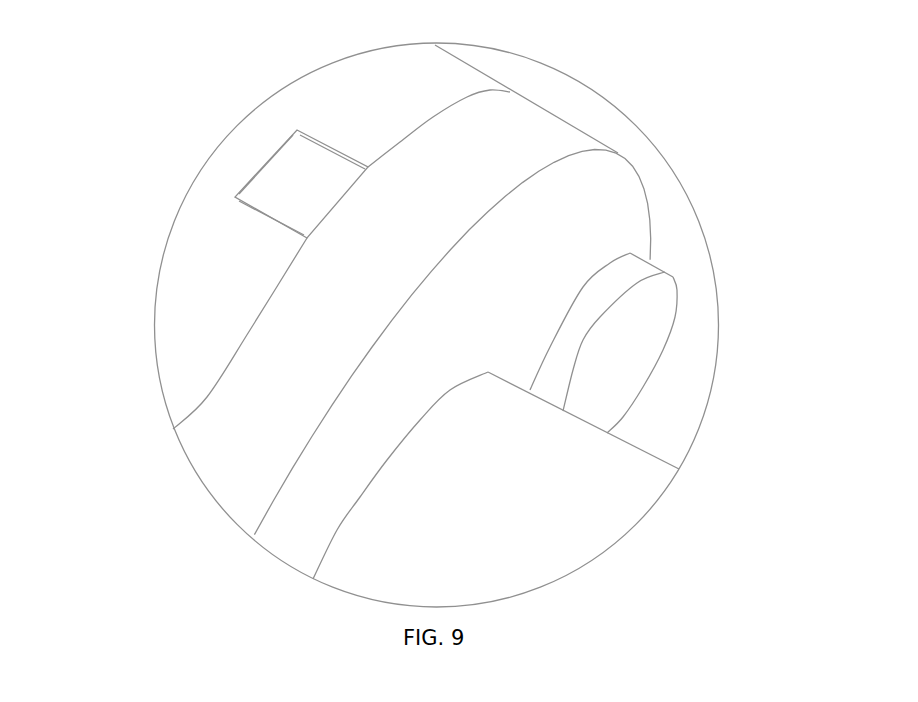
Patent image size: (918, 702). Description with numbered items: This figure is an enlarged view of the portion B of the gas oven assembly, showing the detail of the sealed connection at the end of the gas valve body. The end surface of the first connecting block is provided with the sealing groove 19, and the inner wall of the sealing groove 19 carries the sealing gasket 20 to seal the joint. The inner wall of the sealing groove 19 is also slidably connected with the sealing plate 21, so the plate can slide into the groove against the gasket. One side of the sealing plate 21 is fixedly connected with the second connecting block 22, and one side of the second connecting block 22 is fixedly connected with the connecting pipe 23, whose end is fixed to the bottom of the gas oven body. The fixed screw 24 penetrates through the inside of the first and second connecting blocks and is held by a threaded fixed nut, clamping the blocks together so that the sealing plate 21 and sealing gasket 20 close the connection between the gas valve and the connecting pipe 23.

The sealing groove 19 is at (168, 372).
The sealing gasket 20 is at (370, 167).
The sealing plate 21 is at (290, 183).
The second connecting block 22 is at (237, 487).
The connecting pipe 23 is at (535, 518).
The fixed screw 24 is at (613, 367).
The portion B is at (700, 203).